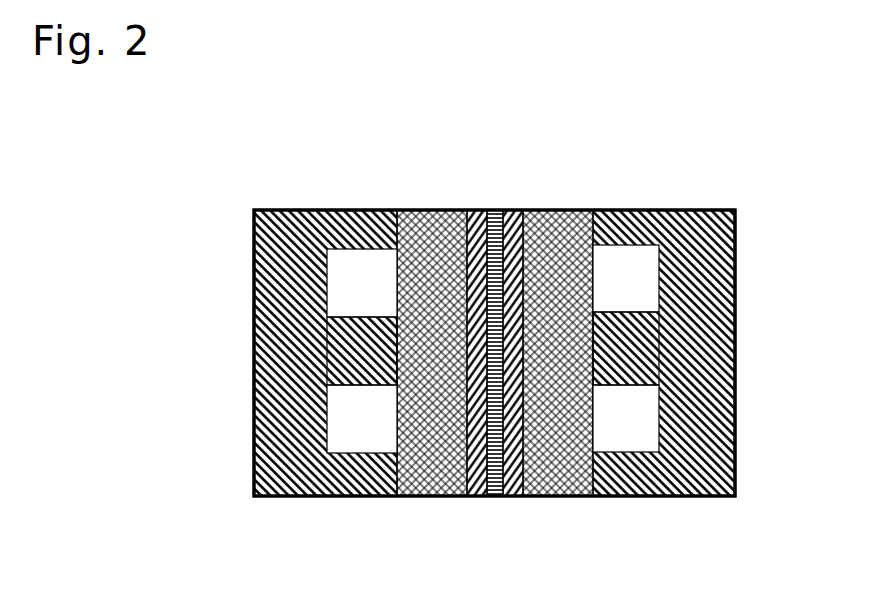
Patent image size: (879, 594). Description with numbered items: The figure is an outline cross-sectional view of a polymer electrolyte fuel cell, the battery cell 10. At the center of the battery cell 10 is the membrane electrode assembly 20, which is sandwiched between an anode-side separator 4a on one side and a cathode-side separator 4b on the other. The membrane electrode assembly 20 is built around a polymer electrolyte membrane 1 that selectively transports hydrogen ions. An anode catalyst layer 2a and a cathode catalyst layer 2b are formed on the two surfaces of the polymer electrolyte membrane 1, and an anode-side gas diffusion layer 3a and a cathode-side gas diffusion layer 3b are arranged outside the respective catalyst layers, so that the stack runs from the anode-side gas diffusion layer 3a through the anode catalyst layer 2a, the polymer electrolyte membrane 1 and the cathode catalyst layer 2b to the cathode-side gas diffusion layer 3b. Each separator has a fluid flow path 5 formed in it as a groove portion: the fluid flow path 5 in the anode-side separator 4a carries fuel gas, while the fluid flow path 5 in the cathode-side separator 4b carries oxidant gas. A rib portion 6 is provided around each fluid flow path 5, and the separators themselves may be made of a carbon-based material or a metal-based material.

The polymer electrolyte membrane 1 is at (493, 496).
The anode catalyst layer 2a is at (477, 496).
The cathode catalyst layer 2b is at (513, 496).
The anode-side gas diffusion layer 3a is at (417, 496).
The cathode-side gas diffusion layer 3b is at (572, 496).
The anode-side separator 4a is at (322, 496).
The cathode-side separator 4b is at (685, 496).
The fluid flow path 5 is at (347, 416).
The rib portion 6 is at (360, 455).
The battery cell 10 is at (730, 200).
The membrane electrode assembly 20 is at (593, 210).